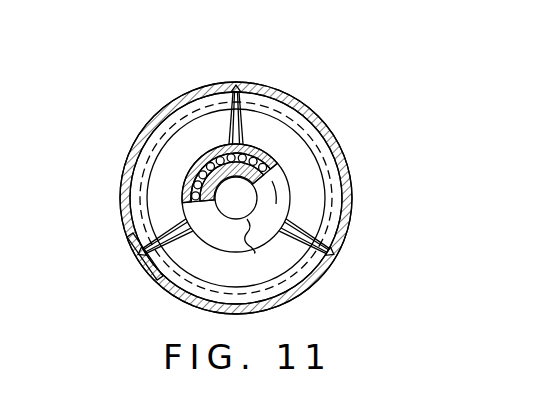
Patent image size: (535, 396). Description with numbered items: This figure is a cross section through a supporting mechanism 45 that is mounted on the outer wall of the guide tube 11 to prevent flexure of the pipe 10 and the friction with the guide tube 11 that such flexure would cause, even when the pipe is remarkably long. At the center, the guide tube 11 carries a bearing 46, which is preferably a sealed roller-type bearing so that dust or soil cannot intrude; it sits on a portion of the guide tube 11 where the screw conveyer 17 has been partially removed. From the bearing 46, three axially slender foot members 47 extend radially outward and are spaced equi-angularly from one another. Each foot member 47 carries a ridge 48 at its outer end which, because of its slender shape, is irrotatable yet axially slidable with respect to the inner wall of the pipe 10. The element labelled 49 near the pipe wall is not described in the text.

The pipe 10 is at (288, 98).
The guide tube 11 is at (247, 252).
The screw conveyer 17 is at (310, 180).
The supporting mechanism 45 is at (286, 207).
The bearing 46 is at (266, 166).
The foot member 47 is at (231, 129).
The ridge 48 is at (241, 92).
The lock bar 49 is at (155, 272).